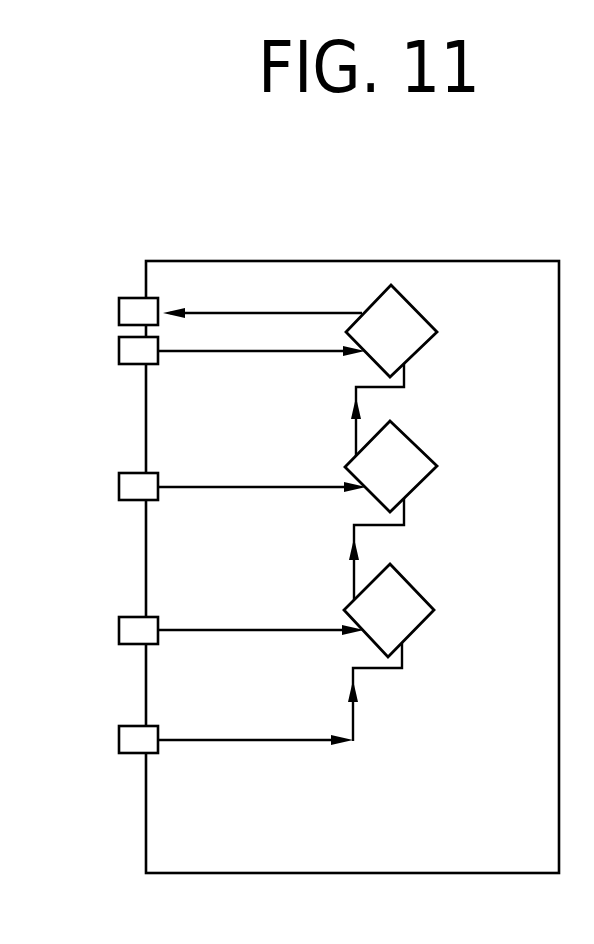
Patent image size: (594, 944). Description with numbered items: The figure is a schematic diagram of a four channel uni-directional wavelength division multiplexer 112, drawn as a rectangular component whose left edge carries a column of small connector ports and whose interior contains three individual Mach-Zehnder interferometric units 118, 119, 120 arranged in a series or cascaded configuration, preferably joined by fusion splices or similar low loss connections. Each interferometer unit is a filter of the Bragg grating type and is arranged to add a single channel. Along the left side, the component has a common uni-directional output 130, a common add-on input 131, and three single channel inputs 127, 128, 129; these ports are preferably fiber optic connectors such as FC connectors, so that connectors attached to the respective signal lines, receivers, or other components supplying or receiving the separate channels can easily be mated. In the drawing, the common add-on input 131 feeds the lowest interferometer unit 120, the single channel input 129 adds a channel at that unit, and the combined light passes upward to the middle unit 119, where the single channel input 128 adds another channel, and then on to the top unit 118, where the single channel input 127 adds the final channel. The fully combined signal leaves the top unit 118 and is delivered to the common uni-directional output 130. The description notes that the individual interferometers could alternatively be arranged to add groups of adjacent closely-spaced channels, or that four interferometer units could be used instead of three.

The four channel uni-directional multiplexer 112 is at (410, 265).
The Mach-Zehnder interferometric unit 118 is at (402, 317).
The Mach-Zehnder interferometric unit 119 is at (402, 453).
The Mach-Zehnder interferometric unit 120 is at (405, 600).
The single channel input 127 is at (122, 353).
The single channel input 128 is at (119, 490).
The single channel input 129 is at (119, 634).
The common uni-directional output 130 is at (133, 305).
The common add-on input 131 is at (119, 742).